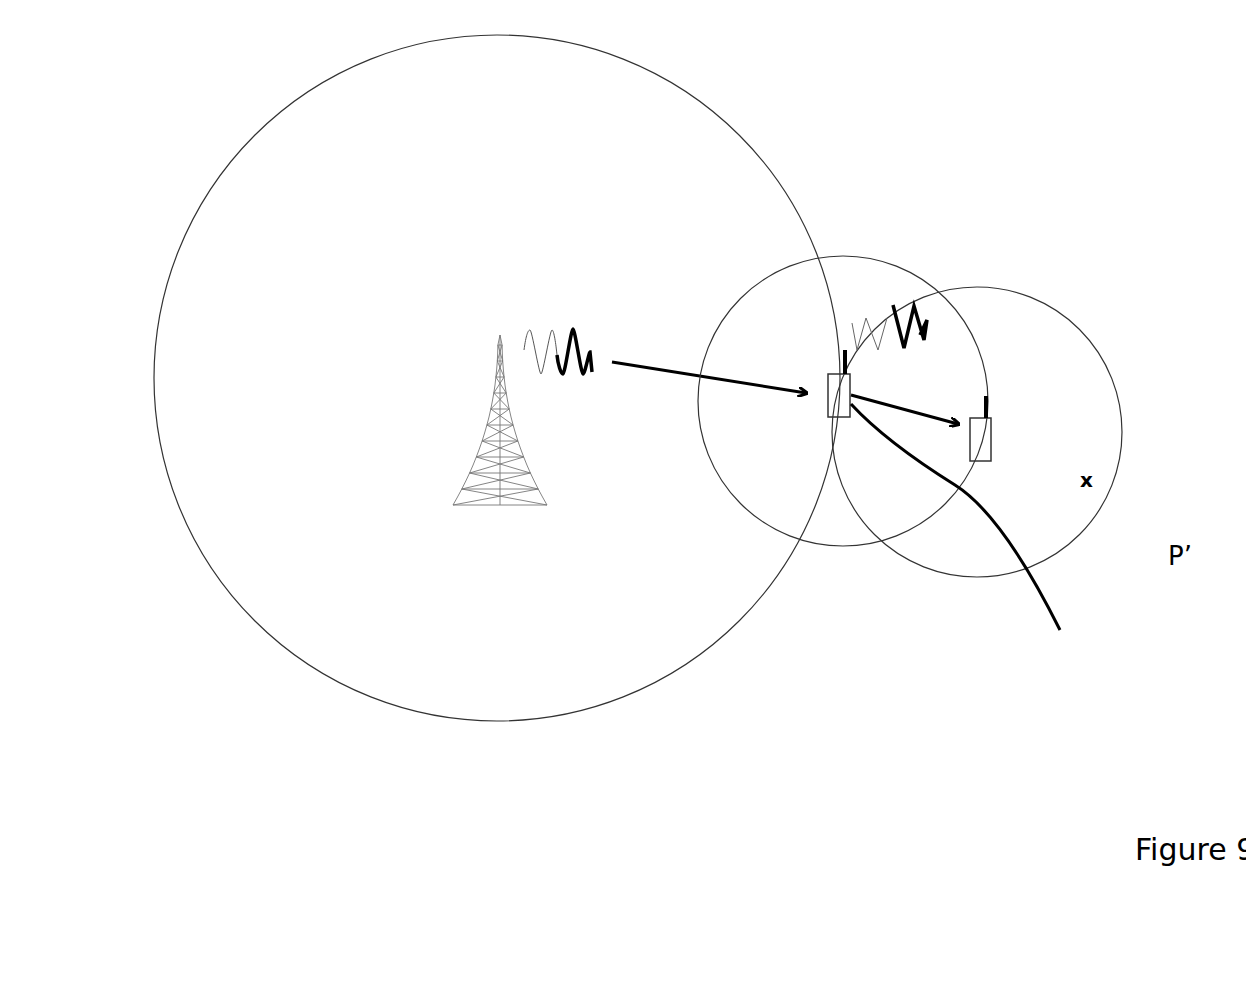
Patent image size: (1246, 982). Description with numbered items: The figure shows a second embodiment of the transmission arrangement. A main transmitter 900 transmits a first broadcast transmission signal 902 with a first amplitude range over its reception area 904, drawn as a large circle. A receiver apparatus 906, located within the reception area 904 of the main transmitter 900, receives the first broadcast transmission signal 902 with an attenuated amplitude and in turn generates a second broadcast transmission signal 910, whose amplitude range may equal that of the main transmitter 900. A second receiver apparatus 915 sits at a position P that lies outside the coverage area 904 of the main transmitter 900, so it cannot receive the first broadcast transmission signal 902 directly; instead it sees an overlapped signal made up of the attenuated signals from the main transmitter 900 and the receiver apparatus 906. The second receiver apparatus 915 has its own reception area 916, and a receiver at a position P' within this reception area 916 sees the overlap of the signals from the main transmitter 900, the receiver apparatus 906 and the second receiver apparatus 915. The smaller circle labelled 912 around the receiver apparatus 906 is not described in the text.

The main transmitter 900 is at (483, 432).
The first broadcast transmission signal 902 is at (551, 327).
The reception area of the main transmitter 904 is at (252, 140).
The receiver apparatus 906 is at (967, 529).
The second broadcast transmission signal 910 is at (875, 311).
The first device coverage area 912 is at (828, 550).
The second receiver apparatus 915 is at (989, 443).
The reception area of the second receiver apparatus 916 is at (1028, 297).